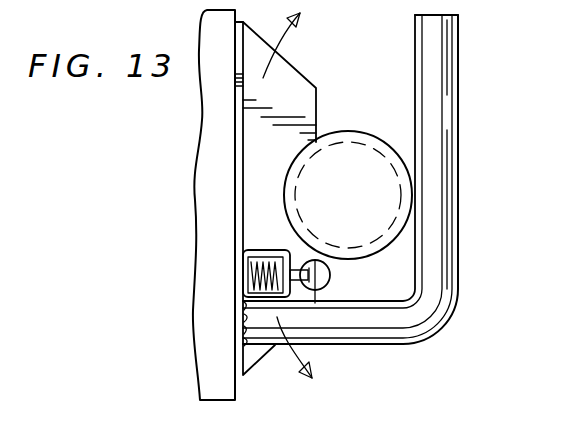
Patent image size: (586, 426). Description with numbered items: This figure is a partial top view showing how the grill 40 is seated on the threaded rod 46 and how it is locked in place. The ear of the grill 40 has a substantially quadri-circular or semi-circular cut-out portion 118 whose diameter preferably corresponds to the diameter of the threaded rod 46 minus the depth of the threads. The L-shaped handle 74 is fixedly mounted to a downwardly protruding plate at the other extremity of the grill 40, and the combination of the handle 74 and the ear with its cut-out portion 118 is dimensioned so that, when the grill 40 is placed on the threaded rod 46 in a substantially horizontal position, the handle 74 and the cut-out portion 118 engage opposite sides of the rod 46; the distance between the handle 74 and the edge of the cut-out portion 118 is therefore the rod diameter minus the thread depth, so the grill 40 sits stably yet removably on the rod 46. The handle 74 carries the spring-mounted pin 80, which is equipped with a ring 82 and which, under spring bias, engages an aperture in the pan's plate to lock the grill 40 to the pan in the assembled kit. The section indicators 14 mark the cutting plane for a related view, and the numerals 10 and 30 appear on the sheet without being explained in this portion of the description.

The direction arrow / assembly 10 is at (286, 76).
The section line 14 is at (193, 197).
The apparatus 30 is at (513, 6).
The grill 40 is at (210, 240).
The threaded rod 46 is at (357, 132).
The handle 74 is at (445, 72).
The spring-mounted pin 80 is at (266, 265).
The ring 82 is at (333, 282).
The cut-out portion 118 is at (292, 168).